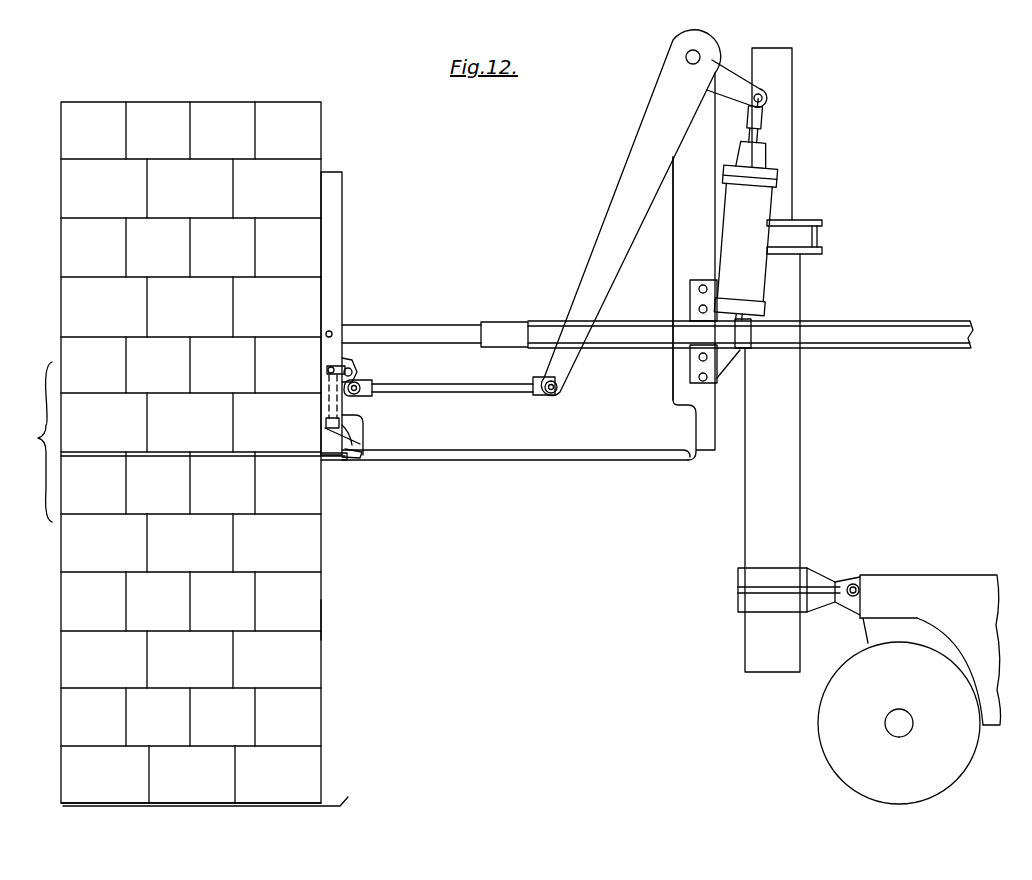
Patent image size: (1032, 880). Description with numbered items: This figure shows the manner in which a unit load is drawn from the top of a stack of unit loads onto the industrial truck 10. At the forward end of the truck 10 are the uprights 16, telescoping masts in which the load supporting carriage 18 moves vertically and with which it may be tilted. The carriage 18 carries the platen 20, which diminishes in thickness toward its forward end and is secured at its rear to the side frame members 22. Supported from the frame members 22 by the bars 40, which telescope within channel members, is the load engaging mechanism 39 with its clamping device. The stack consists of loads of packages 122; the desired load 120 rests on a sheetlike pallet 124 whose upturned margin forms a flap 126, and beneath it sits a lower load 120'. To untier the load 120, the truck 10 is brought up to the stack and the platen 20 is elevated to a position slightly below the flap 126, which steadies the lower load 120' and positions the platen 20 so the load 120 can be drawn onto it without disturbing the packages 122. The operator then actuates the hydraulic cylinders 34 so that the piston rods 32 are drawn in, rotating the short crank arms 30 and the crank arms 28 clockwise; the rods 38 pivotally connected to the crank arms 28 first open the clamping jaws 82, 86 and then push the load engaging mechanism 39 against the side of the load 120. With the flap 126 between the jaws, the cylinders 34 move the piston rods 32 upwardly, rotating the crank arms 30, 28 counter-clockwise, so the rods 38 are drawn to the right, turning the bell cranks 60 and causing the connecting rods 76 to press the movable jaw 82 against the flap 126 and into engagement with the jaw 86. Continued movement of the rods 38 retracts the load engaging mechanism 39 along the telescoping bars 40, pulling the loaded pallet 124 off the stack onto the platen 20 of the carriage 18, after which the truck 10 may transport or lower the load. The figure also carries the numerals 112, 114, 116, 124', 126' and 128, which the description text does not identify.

The industrial truck 10 is at (915, 525).
The uprights 16 is at (785, 457).
The load supporting carriage 18 is at (660, 293).
The platen 20 is at (537, 458).
The side frame members 22 is at (680, 242).
The crank arms 28 is at (652, 110).
The short crank arms 30 is at (725, 68).
The piston rod 32 is at (762, 137).
The hydraulic cylinder 34 is at (755, 205).
The rods 38 is at (482, 396).
The load engaging mechanism 39 is at (375, 269).
The bars 40 is at (435, 326).
The bell cranks 60 is at (362, 384).
The connecting rods 76 is at (345, 408).
The movable clamping jaw 82 is at (355, 447).
The clamping jaw 86 is at (358, 463).
The clamp block 112 is at (638, 347).
The rod 114 is at (906, 322).
The plate 116 is at (346, 215).
The load 120 is at (243, 452).
The load beneath the desired load 120' is at (363, 620).
The packages 122 is at (207, 113).
The sheetlike pallet 124 is at (203, 478).
The bottom mortar joint 124' is at (191, 783).
The flap 126 is at (356, 485).
The bottom plate 126' is at (231, 782).
The wall section 128 is at (27, 442).